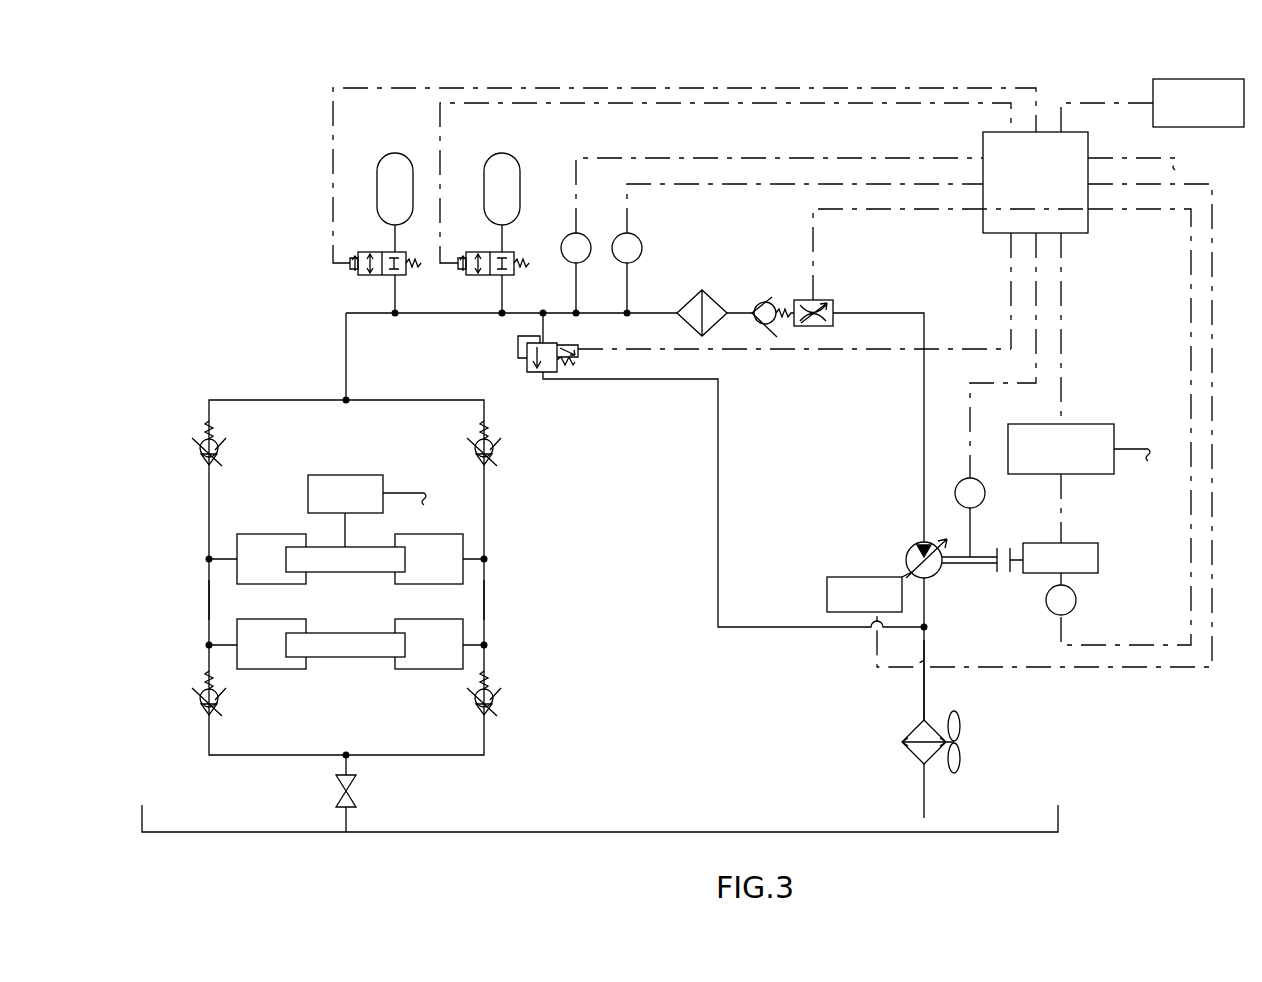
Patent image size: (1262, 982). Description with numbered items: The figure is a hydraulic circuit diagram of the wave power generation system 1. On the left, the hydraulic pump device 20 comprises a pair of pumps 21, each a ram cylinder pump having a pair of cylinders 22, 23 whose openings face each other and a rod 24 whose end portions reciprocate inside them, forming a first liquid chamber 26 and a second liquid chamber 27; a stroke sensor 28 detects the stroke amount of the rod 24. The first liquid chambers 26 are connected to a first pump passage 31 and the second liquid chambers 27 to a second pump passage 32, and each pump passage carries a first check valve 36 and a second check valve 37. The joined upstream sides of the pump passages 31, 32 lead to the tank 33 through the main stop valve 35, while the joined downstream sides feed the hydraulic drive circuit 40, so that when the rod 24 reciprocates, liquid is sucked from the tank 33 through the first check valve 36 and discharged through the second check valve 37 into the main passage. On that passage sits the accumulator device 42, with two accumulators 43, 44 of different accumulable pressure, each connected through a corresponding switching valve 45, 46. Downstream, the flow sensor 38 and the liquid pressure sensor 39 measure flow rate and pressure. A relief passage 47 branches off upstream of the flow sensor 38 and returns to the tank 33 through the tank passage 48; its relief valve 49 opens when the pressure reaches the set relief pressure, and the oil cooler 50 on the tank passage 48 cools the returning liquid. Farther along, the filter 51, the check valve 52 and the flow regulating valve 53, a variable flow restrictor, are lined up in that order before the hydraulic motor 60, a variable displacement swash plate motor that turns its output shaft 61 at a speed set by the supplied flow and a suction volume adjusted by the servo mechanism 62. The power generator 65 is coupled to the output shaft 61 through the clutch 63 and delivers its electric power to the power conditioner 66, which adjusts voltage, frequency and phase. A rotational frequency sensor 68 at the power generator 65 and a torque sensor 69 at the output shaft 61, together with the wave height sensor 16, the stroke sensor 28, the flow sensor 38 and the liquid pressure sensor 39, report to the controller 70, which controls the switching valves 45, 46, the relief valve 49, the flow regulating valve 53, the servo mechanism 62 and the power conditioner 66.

The wave power generation system 1 is at (1182, 61).
The wave height sensor 16 is at (1233, 82).
The hydraulic pump device 20 is at (201, 378).
The pump 21 is at (355, 605).
The cylinder 22 is at (264, 534).
The cylinder 23 is at (456, 534).
The rod 24 is at (352, 590).
The first liquid chamber 26 is at (255, 579).
The second liquid chamber 27 is at (415, 579).
The stroke sensor 28 is at (351, 475).
The first pump passage 31 is at (209, 600).
The second pump passage 32 is at (484, 600).
The tank 33 is at (623, 833).
The main stop valve 35 is at (356, 797).
The first check valve 36 is at (198, 708).
The second check valve 37 is at (198, 456).
The flow sensor 38 is at (582, 241).
The liquid pressure sensor 39 is at (634, 241).
The hydraulic drive circuit 40 is at (346, 358).
The accumulator device 42 is at (515, 117).
The accumulator 43 is at (387, 163).
The accumulator 44 is at (494, 163).
The switching valve 45 is at (378, 252).
The switching valve 46 is at (485, 252).
The relief passage 47 is at (665, 380).
The tank passage 48 is at (923, 700).
The relief valve 49 is at (563, 339).
The oil cooler 50 is at (921, 753).
The filter 51 is at (708, 300).
The check valve 52 is at (767, 298).
The flow regulating valve 53 is at (823, 300).
The hydraulic motor 60 is at (912, 548).
The output shaft 61 is at (958, 566).
The servo mechanism 62 is at (835, 579).
The clutch 63 is at (1007, 583).
The power generator 65 is at (1083, 545).
The power conditioner 66 is at (1103, 424).
The rotational frequency sensor 68 is at (1073, 605).
The torque sensor 69 is at (982, 497).
The controller 70 is at (1083, 142).